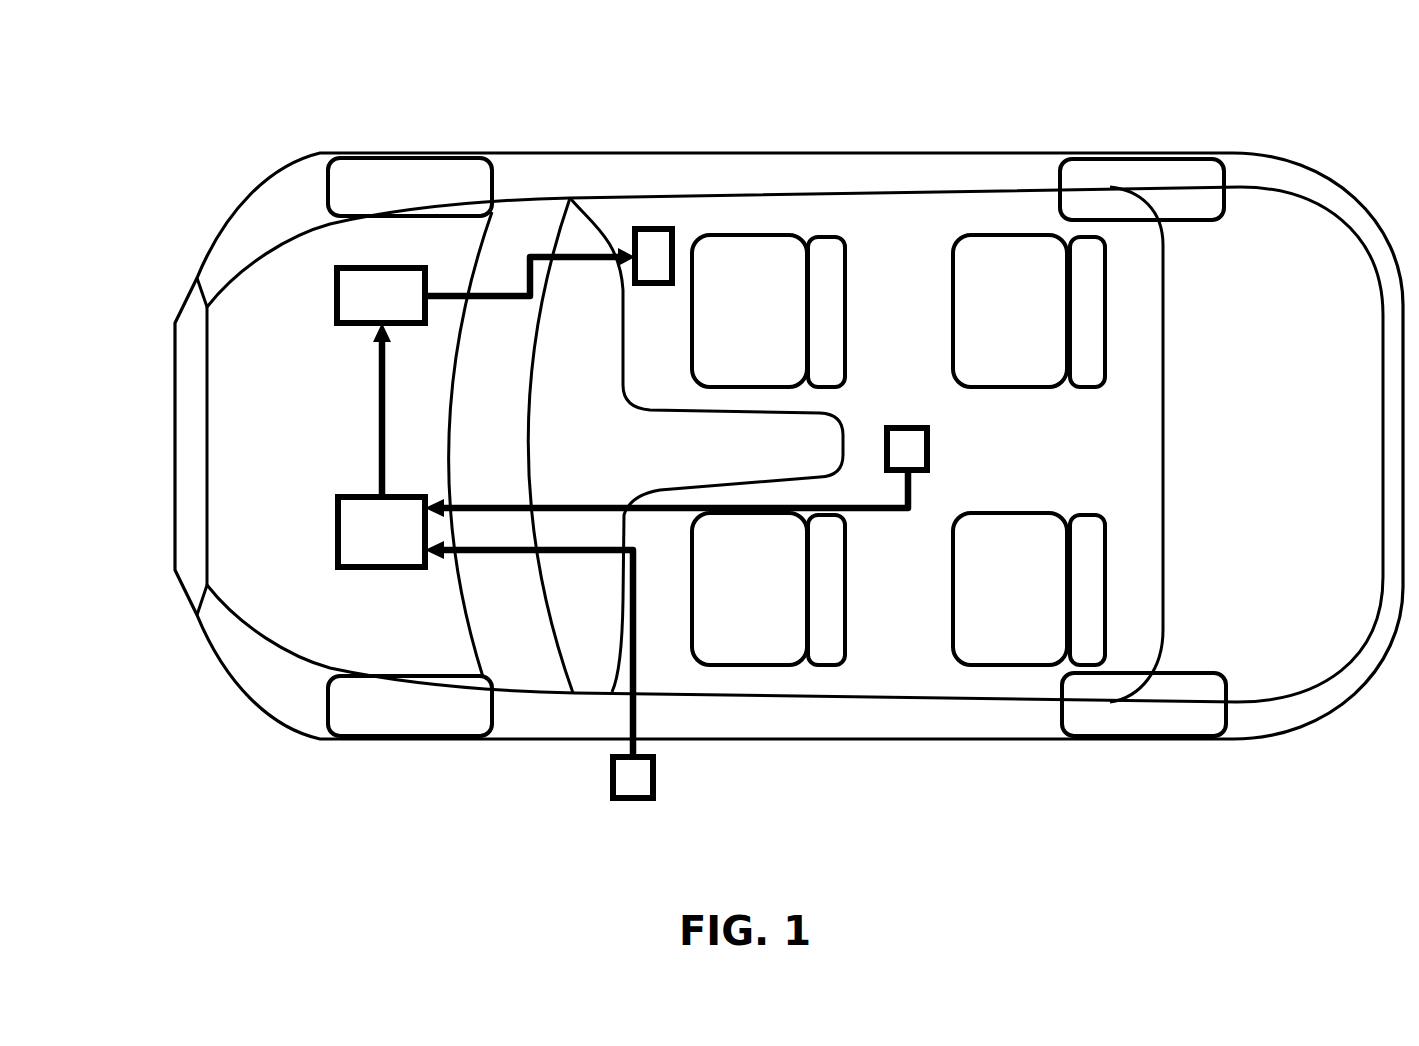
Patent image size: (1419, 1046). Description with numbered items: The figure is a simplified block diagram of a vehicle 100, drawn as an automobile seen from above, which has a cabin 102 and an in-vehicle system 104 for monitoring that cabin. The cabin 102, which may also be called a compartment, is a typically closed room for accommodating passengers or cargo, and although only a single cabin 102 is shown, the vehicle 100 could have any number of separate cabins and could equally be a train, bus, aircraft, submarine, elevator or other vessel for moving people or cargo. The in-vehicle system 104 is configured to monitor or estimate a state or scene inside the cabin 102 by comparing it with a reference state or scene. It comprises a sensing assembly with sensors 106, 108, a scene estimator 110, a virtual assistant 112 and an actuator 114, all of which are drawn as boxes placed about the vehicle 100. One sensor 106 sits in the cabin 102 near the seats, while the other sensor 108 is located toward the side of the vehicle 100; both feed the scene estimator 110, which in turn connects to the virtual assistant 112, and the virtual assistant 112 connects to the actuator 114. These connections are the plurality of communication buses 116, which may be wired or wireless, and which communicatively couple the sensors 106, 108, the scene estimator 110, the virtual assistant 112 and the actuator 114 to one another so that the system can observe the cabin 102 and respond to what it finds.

The vehicle 100 is at (1300, 135).
The cabin 102 is at (910, 222).
The in-vehicle system 104 is at (917, 260).
The sensor 106 is at (910, 440).
The sensor 108 is at (627, 774).
The scene estimator 110 is at (376, 543).
The virtual assistant 112 is at (365, 293).
The actuator 114 is at (655, 250).
The communication buses 116 is at (582, 250).